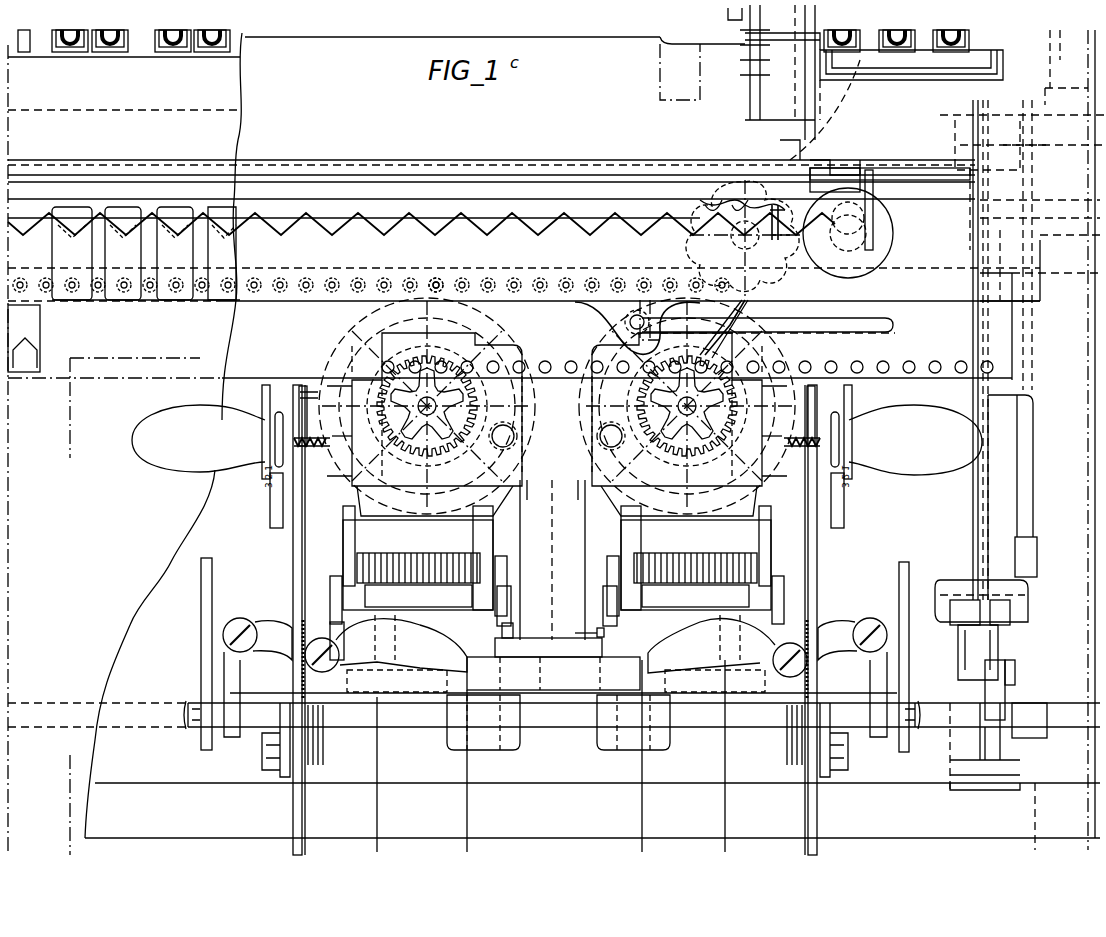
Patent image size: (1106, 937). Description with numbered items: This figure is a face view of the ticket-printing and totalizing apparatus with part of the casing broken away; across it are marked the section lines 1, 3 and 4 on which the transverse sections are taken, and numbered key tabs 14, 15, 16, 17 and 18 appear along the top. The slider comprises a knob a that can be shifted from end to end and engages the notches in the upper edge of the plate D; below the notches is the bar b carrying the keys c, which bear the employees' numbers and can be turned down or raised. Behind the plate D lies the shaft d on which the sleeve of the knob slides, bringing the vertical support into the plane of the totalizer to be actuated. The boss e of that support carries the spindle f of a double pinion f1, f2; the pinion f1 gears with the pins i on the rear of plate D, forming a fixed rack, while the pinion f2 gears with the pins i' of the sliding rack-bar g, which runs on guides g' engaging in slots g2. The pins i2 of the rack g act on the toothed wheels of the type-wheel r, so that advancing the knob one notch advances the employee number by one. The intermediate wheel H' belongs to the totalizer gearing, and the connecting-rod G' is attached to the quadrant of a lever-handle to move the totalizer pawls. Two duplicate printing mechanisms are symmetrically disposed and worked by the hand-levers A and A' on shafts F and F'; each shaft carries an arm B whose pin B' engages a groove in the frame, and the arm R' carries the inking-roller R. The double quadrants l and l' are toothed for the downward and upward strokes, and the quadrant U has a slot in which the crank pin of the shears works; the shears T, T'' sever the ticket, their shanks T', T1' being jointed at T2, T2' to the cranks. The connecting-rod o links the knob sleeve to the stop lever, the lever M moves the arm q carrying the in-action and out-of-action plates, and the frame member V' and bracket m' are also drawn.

The section line 1 2 1 is at (733, 44).
The section line 3 4 3 is at (130, 395).
The section line 3 4 is at (59, 805).
The key box 14 is at (24, 338).
The key tab 15 is at (72, 253).
The key tab 16 is at (123, 253).
The key tab 17 is at (175, 253).
The key tab 18 is at (222, 253).
The key c is at (115, 253).
The bar b is at (150, 300).
The notched plate D is at (301, 244).
The shaft d is at (421, 215).
The pins on plate D i is at (371, 267).
The pins of rack-bar g i' is at (446, 267).
The pins of sliding rack i2 is at (835, 362).
The boss of support E e is at (858, 195).
The knob a is at (848, 233).
The spindle f is at (743, 240).
The pinion f1 is at (716, 202).
The pinion f2 is at (740, 205).
The intermediate wheel H' is at (763, 62).
The frame member V' is at (1066, 67).
The sliding rack-bar g is at (398, 413).
The guides g' is at (706, 413).
The slots g2 is at (893, 325).
The arm q is at (725, 319).
The type-wheel r is at (301, 391).
The hand-lever A is at (198, 438).
The hand-lever A' is at (915, 440).
The inking-roller R is at (420, 566).
The arm R' is at (693, 566).
The lever M is at (553, 585).
The arm B is at (500, 680).
The pin B' is at (580, 635).
The shears T is at (386, 653).
The shank of shears T' is at (258, 679).
The shears T'' is at (727, 653).
The shank of shears T1' is at (852, 679).
The joint T2 is at (240, 622).
The joint T2' is at (868, 622).
The quadrant U is at (539, 655).
The double quadrant l is at (305, 620).
The double quadrant l' is at (796, 620).
The shaft F is at (624, 703).
The shaft F' is at (925, 700).
The connecting-rod G' is at (988, 350).
The connecting-rod o is at (1000, 530).
The bracket m' is at (998, 725).